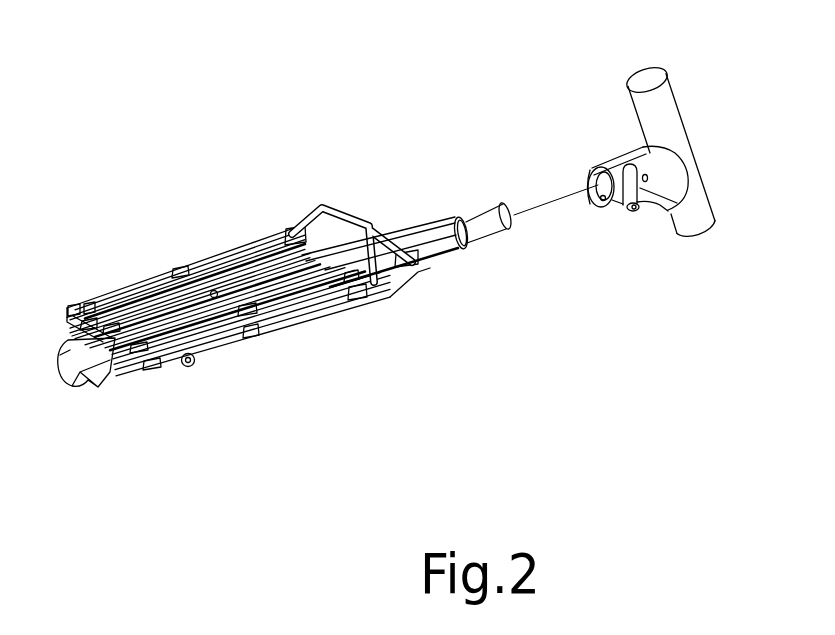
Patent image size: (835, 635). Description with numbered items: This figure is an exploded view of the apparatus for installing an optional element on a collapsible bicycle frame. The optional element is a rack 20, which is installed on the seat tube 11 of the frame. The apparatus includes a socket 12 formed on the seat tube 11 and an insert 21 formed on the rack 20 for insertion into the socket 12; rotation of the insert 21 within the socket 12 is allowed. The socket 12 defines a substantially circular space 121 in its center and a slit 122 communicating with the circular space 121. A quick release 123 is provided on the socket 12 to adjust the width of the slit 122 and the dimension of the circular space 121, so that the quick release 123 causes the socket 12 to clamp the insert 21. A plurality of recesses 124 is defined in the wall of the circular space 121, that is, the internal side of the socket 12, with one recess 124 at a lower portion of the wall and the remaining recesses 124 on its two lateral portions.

The seat tube 11 is at (678, 100).
The socket 12 is at (628, 150).
The substantially circular space 121 is at (597, 180).
The slit 122 is at (600, 207).
The quick release 123 is at (640, 210).
The recesses 124 is at (650, 178).
The rack 20 is at (288, 238).
The insert 21 is at (482, 208).